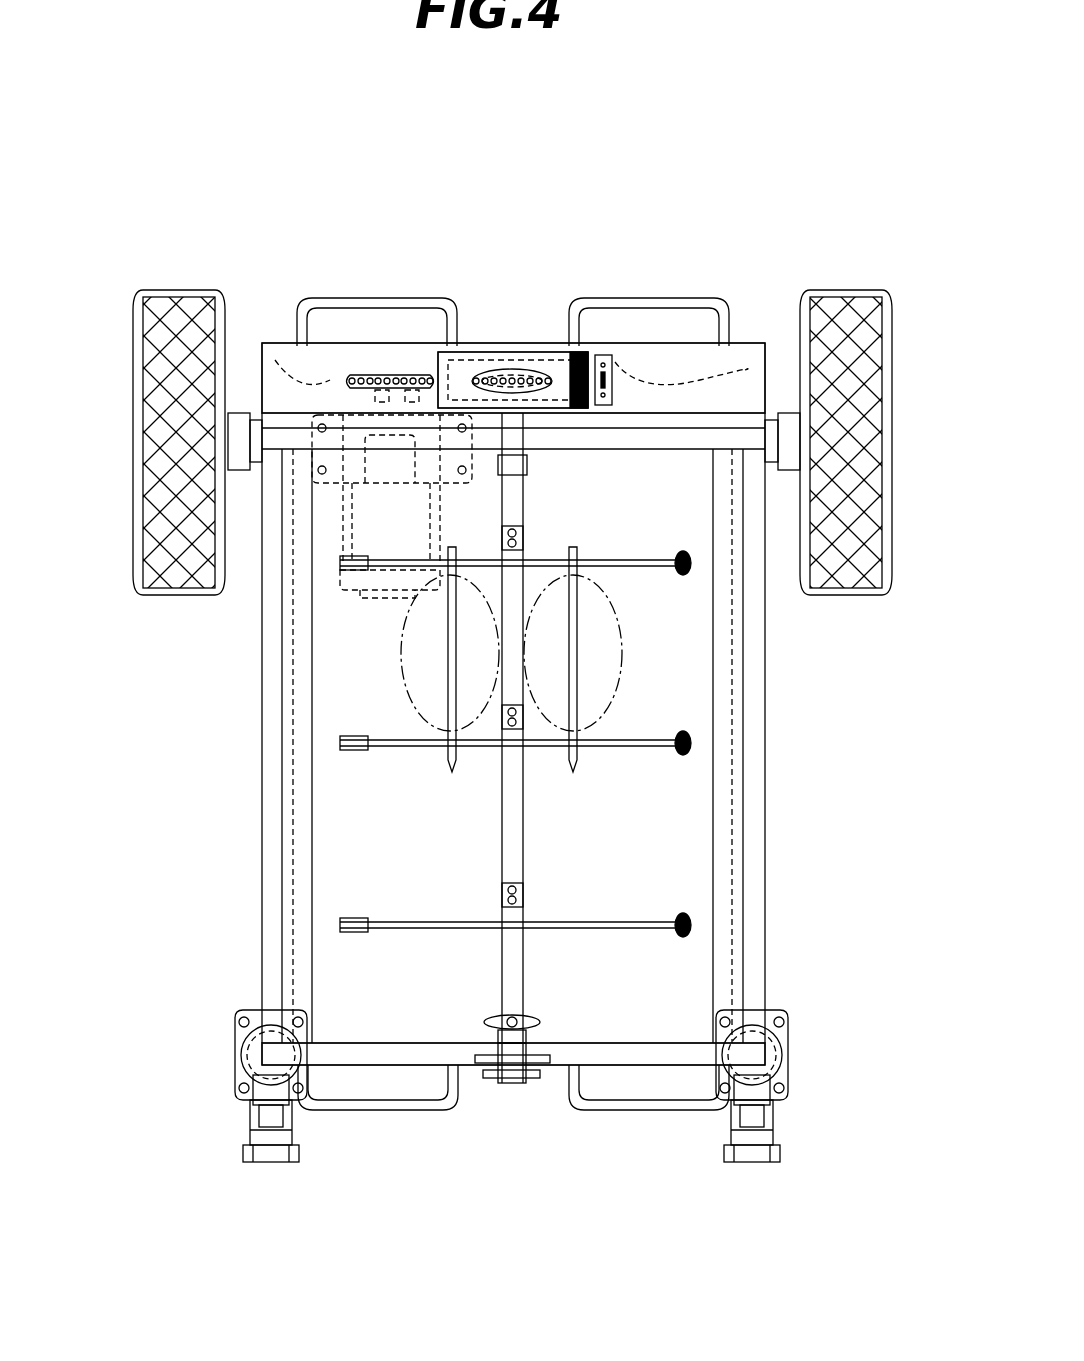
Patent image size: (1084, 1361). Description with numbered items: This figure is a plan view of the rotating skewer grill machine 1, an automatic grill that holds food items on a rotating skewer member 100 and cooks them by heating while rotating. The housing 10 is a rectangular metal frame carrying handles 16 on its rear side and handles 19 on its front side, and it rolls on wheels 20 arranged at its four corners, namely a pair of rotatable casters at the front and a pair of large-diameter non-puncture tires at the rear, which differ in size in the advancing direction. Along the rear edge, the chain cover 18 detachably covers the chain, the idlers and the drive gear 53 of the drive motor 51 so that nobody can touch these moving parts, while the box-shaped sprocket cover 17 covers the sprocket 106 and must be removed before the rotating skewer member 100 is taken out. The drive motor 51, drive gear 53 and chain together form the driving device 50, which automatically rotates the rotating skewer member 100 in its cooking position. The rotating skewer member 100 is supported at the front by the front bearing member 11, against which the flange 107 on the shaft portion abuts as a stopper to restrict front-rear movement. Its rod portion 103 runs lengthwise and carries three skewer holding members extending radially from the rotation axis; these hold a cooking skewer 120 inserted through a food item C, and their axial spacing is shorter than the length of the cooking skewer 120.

The rotating skewer grill machine 1 is at (215, 135).
The housing 10 is at (270, 800).
The front bearing member 11 is at (550, 1070).
The handles 16 is at (385, 300).
The sprocket cover 17 is at (465, 340).
The chain cover 18 is at (757, 365).
The handles 19 is at (370, 1108).
The wheels 20 is at (130, 600).
The driving device 50 is at (505, 235).
The drive motor 51 is at (340, 510).
The drive gear 53 is at (330, 385).
The rotating skewer member 100 is at (622, 782).
The rod portion 103 is at (512, 825).
The sprocket 106 is at (556, 365).
The flange 107 is at (540, 1025).
The cooking skewer 120 is at (440, 662).
The food item C is at (405, 640).